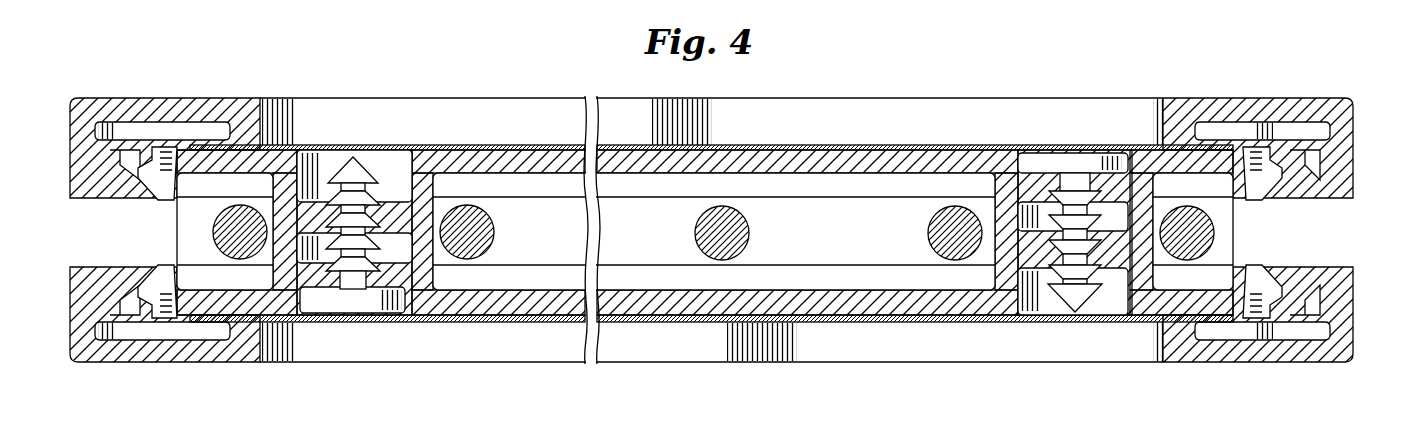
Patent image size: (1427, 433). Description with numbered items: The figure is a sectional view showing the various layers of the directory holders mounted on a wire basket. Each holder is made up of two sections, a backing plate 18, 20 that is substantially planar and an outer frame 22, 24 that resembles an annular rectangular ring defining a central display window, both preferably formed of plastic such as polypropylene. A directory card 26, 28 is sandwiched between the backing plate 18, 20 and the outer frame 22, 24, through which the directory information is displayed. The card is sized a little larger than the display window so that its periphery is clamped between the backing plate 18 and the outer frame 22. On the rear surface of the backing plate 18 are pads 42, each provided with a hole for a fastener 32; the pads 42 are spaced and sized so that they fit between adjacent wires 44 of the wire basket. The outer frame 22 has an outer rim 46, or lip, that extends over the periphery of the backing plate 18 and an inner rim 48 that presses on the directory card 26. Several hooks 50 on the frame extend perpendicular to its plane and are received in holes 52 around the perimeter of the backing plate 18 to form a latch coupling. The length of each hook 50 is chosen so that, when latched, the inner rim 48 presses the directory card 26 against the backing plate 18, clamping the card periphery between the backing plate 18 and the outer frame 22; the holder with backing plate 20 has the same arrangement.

The backing plate 18 is at (698, 300).
The backing plate 20 is at (860, 162).
The outer frame 22 is at (130, 350).
The outer frame 24 is at (130, 102).
The directory card 26 is at (940, 322).
The directory card 28 is at (508, 145).
The fastener 32 is at (1077, 163).
The pads 42 is at (1003, 193).
The wires 44 is at (750, 231).
The outer rim 46 is at (1343, 156).
The inner rim 48 is at (1155, 328).
The hooks 50 is at (162, 272).
The holes 52 is at (175, 293).